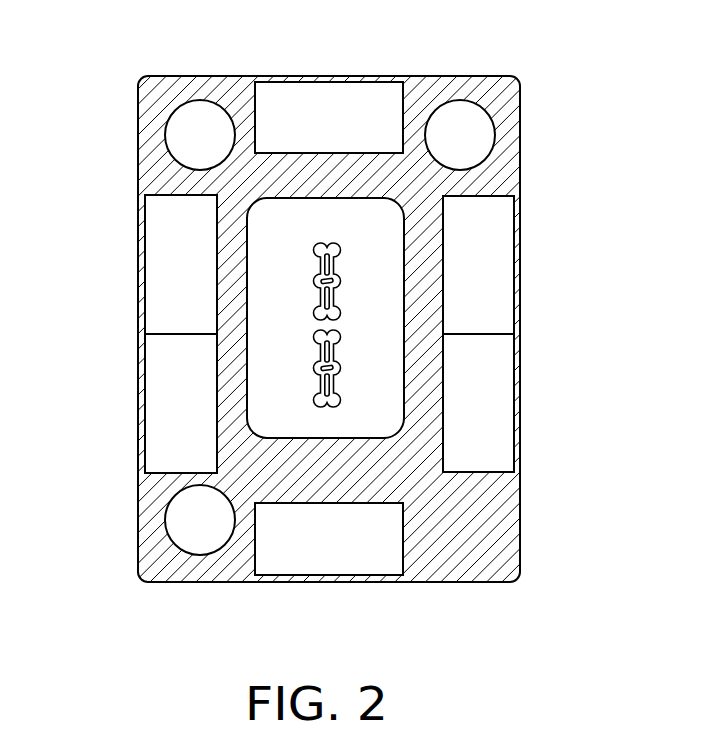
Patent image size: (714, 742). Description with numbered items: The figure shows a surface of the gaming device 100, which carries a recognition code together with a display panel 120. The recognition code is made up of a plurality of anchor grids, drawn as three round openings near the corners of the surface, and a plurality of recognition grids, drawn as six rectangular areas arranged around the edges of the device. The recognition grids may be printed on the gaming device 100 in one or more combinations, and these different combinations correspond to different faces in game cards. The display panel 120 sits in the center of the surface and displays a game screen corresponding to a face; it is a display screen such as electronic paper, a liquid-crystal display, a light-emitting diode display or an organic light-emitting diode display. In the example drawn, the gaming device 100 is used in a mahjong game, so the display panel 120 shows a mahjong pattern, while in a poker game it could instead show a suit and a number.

The gaming device 100 is at (648, 659).
The display panel 120 is at (377, 237).